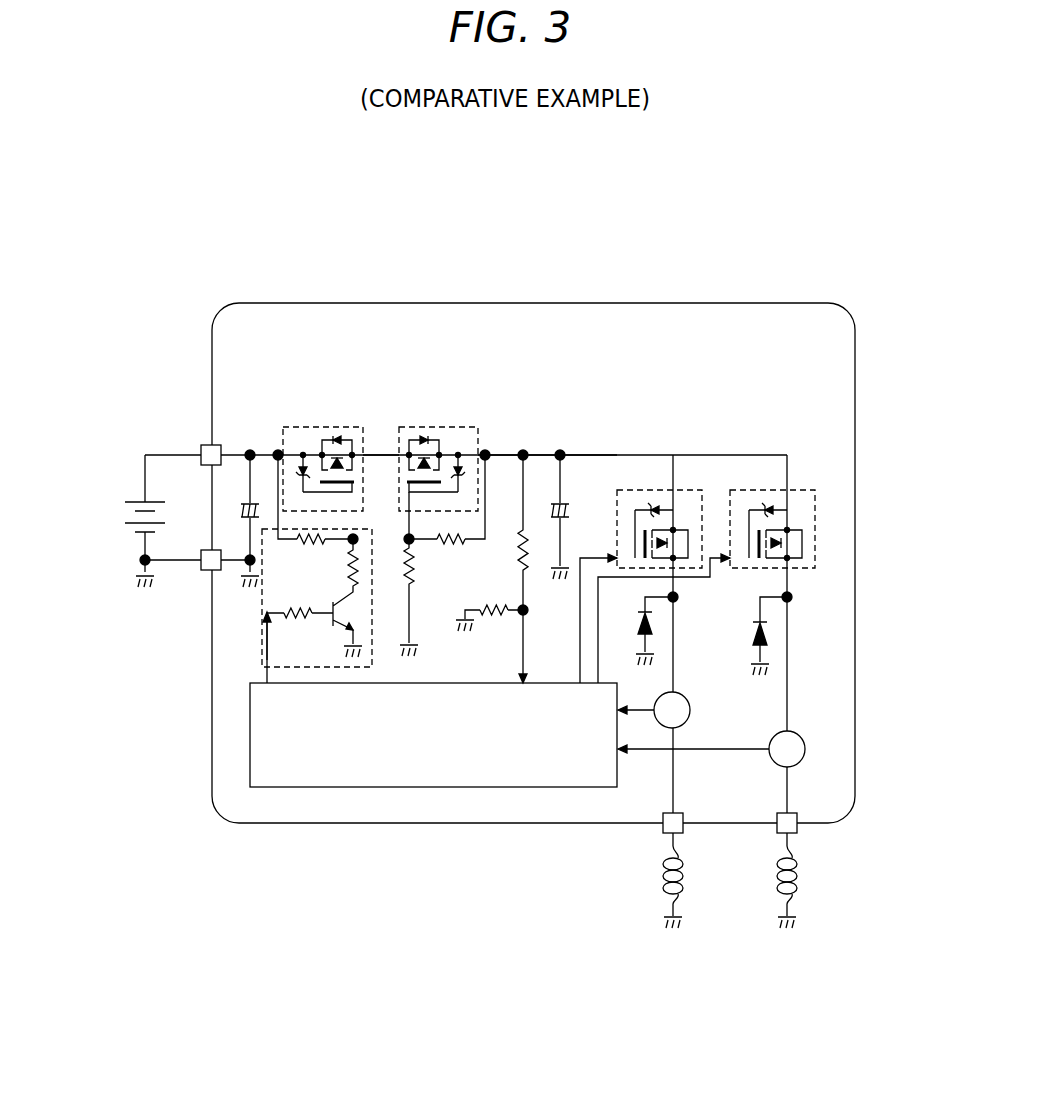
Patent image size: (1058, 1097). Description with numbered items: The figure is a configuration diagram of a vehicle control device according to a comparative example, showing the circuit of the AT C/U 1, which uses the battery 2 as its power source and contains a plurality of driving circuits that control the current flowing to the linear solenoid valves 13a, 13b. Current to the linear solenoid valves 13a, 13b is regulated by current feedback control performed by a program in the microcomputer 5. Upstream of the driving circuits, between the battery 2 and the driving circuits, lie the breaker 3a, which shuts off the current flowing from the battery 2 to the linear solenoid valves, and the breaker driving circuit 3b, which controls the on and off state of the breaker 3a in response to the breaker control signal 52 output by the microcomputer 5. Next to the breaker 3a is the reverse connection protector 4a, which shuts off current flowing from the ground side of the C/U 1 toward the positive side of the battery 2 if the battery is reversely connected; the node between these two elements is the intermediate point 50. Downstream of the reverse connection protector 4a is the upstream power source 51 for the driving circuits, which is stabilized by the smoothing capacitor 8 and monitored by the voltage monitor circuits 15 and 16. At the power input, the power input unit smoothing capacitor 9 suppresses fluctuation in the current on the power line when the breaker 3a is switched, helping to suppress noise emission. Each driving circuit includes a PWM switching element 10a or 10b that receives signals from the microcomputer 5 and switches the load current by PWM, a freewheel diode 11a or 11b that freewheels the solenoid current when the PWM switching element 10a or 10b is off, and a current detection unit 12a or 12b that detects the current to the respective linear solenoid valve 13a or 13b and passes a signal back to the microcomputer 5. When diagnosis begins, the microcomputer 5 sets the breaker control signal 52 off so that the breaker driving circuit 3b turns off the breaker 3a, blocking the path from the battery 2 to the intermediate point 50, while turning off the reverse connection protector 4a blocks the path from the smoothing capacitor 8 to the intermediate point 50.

The AT C/U 1 is at (673, 303).
The battery 2 is at (127, 532).
The breaker 3a is at (290, 427).
The breaker driving circuit 3b is at (313, 670).
The reverse connection protector 4a is at (477, 427).
The microcomputer 5 is at (570, 737).
The smoothing capacitor 8 is at (570, 508).
The power input unit smoothing capacitor 9 is at (248, 504).
The PWM switching element 10a is at (690, 490).
The PWM switching element 10b is at (815, 550).
The freewheel diode 11a is at (655, 630).
The freewheel diode 11b is at (777, 652).
The current detection unit 12a is at (690, 715).
The current detection unit 12b is at (805, 752).
The linear solenoid valve 13a is at (663, 907).
The linear solenoid valve 13b is at (777, 907).
The voltage monitor circuit 15 is at (517, 560).
The voltage monitor circuit 16 is at (513, 602).
The intermediate point 50 is at (383, 455).
The upstream power source 51 is at (582, 453).
The breaker control signal 52 is at (267, 620).